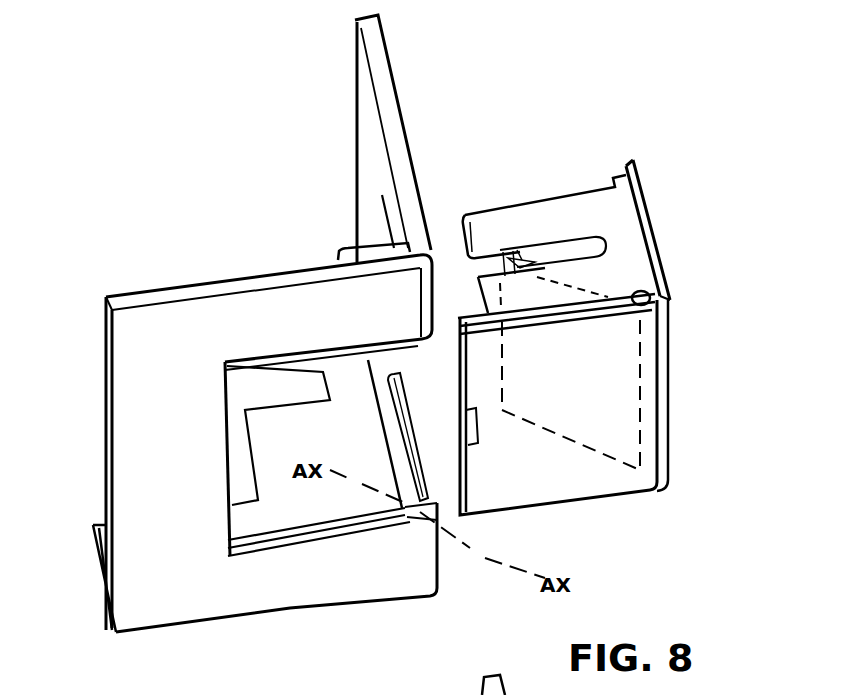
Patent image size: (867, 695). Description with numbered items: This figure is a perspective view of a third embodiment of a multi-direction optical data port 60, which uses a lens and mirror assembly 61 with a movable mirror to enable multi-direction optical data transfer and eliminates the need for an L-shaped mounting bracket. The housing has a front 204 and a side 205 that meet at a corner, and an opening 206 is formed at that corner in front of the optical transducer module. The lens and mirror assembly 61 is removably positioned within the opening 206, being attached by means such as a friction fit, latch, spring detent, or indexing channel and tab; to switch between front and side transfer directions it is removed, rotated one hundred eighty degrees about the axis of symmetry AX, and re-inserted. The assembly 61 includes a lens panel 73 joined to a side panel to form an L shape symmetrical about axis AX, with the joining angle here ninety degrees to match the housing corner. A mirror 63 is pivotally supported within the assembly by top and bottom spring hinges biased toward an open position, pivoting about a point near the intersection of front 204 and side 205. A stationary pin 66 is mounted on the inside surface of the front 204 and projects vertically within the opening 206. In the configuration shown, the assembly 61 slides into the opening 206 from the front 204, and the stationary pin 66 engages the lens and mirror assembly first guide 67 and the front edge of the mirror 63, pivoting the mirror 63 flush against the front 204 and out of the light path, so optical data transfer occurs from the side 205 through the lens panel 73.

The multi-direction optical data port 60 is at (556, 88).
The lens and mirror assembly 61 is at (676, 392).
The mirror 63 is at (578, 410).
The stationary pin 66 is at (345, 254).
The lens and mirror assembly first guide 67 is at (520, 252).
The lens panel 73 is at (516, 476).
The front 204 is at (400, 115).
The side 205 is at (140, 600).
The opening 206 is at (308, 494).